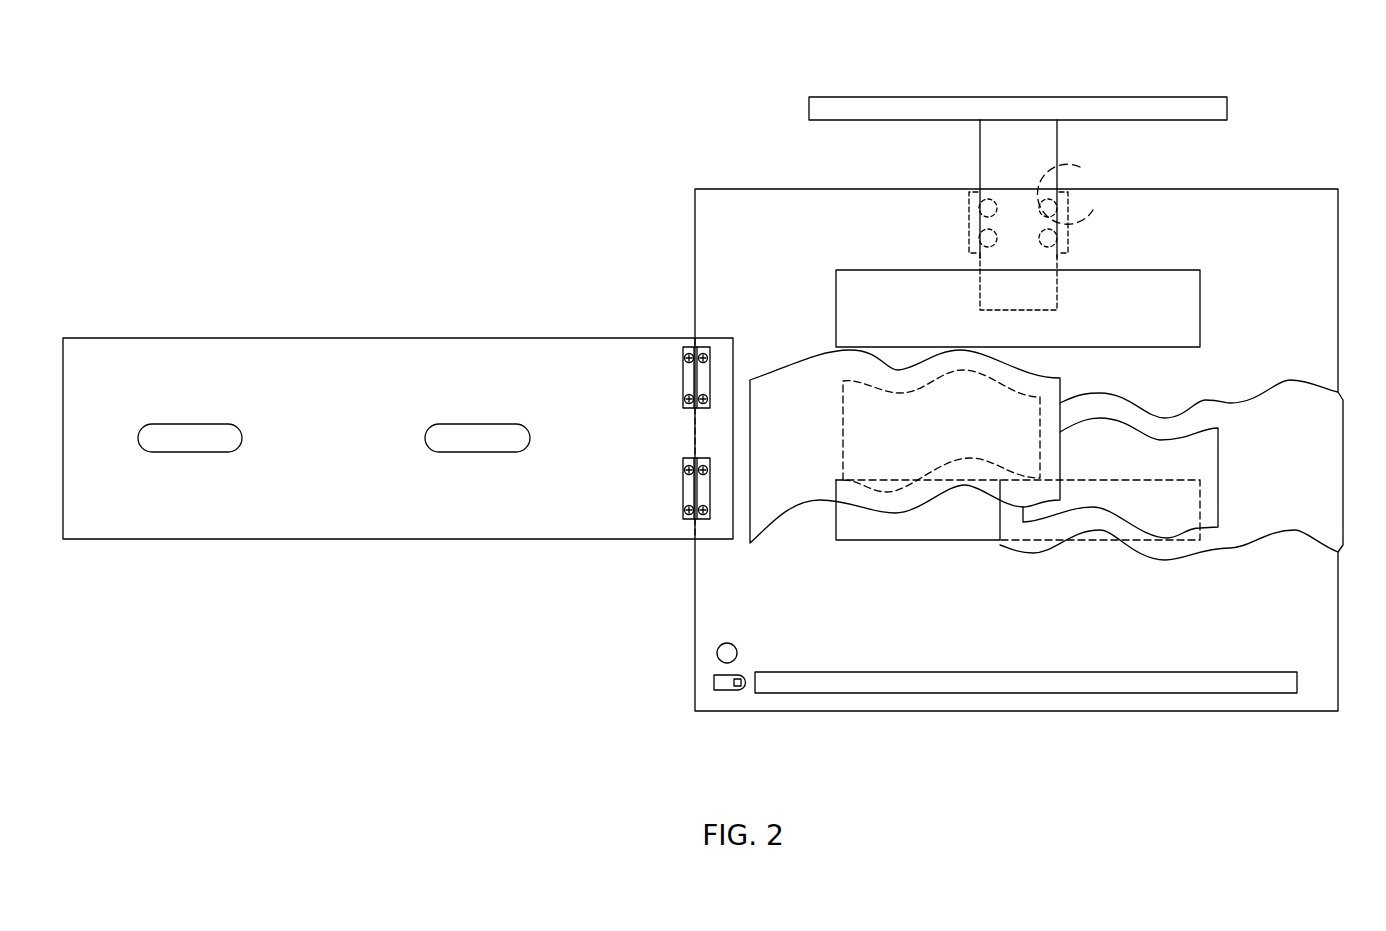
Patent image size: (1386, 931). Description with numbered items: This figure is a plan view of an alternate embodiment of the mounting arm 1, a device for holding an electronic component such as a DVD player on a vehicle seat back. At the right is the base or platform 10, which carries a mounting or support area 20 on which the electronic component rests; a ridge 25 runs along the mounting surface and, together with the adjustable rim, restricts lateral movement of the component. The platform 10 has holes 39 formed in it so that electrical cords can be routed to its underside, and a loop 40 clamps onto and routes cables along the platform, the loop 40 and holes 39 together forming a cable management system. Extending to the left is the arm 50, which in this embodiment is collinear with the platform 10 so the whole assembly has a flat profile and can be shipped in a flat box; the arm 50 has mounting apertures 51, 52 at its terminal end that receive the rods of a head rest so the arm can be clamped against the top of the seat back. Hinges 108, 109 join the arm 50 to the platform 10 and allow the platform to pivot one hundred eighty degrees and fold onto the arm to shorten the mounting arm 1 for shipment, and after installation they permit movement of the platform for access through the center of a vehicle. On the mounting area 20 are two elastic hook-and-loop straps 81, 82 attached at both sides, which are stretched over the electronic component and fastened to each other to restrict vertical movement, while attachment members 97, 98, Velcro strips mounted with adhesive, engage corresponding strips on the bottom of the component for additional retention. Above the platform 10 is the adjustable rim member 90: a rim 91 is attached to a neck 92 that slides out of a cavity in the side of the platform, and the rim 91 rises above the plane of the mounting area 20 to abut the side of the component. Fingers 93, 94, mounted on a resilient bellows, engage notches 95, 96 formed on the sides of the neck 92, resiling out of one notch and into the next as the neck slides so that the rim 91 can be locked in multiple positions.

The mounting arm 1 is at (492, 184).
The base or platform 10 is at (1340, 220).
The mounting or support area 20 is at (1292, 648).
The ridge 25 is at (1046, 683).
The holes 39 is at (725, 643).
The loop 40 is at (728, 690).
The arm 50 is at (548, 347).
The mounting aperture 51 is at (170, 431).
The mounting aperture 52 is at (454, 431).
The strap 81 is at (1300, 408).
The strap 82 is at (798, 390).
The adjustable rim member 90 is at (922, 97).
The rim 91 is at (1228, 103).
The neck 92 is at (992, 140).
The finger 93 is at (1068, 173).
The finger 94 is at (982, 221).
The notch 95 is at (1050, 208).
The notch 96 is at (973, 228).
The attachment member 97 is at (1187, 310).
The attachment member 98 is at (897, 530).
The hinge 108 is at (687, 493).
The hinge 109 is at (687, 378).